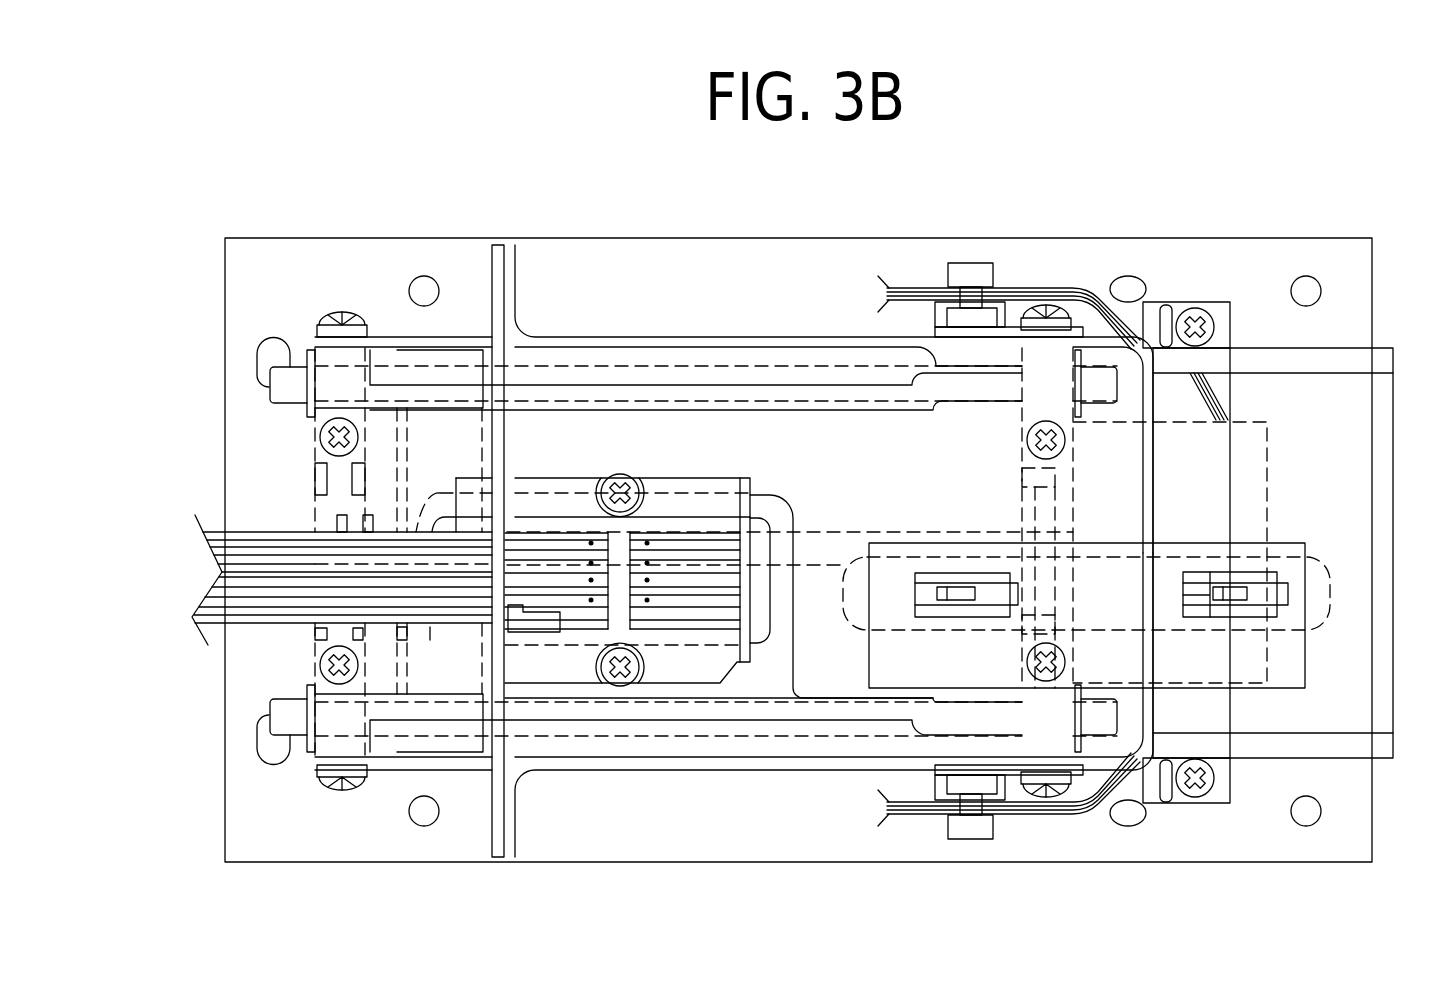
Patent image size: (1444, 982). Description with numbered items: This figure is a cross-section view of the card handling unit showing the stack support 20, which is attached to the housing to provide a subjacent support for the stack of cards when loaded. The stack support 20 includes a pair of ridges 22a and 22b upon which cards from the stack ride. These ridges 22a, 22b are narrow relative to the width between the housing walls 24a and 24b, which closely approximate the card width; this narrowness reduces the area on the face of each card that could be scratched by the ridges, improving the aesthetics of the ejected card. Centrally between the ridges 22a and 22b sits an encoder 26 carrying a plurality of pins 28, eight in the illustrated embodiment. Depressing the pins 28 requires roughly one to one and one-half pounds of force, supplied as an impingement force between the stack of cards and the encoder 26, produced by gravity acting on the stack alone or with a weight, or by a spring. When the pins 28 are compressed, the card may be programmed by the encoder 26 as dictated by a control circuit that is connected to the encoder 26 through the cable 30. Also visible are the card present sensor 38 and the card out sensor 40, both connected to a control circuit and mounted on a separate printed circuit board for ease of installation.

The stack support 20 is at (280, 513).
The ridge 22a is at (668, 707).
The ridge 22b is at (630, 392).
The housing wall 24a is at (732, 760).
The housing wall 24b is at (681, 340).
The encoder 26 is at (690, 485).
The pins 28 is at (580, 545).
The cable 30 is at (420, 555).
The card present sensor 38 is at (969, 573).
The card out sensor 40 is at (1251, 573).